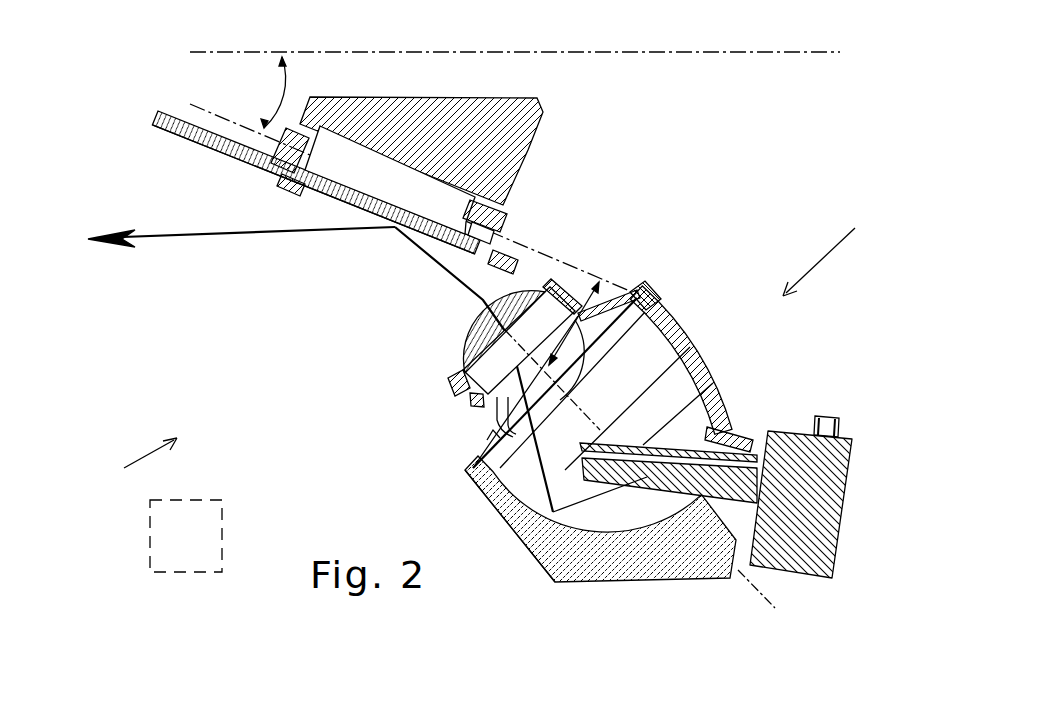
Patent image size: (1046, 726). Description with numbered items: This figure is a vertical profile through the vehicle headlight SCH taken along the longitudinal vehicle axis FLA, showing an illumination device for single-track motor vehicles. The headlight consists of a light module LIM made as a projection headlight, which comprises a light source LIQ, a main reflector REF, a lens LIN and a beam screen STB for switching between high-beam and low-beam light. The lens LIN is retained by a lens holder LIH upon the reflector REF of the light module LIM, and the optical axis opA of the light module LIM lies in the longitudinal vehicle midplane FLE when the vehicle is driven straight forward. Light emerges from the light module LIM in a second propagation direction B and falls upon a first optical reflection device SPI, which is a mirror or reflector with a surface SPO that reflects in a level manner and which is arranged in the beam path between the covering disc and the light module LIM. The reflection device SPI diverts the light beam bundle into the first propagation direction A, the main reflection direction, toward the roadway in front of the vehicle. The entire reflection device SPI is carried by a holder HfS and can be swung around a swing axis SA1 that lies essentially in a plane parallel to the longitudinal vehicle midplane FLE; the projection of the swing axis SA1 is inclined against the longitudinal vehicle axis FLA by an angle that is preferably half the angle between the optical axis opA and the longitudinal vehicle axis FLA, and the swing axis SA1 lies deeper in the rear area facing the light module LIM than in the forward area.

The optical reflection device SPI is at (160, 107).
The reflecting surface SPO is at (212, 150).
The holder HfS is at (524, 134).
The longitudinal vehicle axis FLA is at (817, 53).
The swing axis SA1 is at (540, 250).
The beam screen STB is at (610, 313).
The reflector REF is at (703, 342).
The light module LIM is at (842, 249).
The light source LIQ is at (772, 430).
The second propagation direction B is at (455, 278).
The lens LIN is at (466, 334).
The lens holder LIH is at (462, 397).
The first propagation direction A is at (160, 238).
The vehicle headlight SCH is at (124, 461).
The longitudinal vehicle midplane FLE is at (223, 540).
The optical axis opA is at (767, 597).